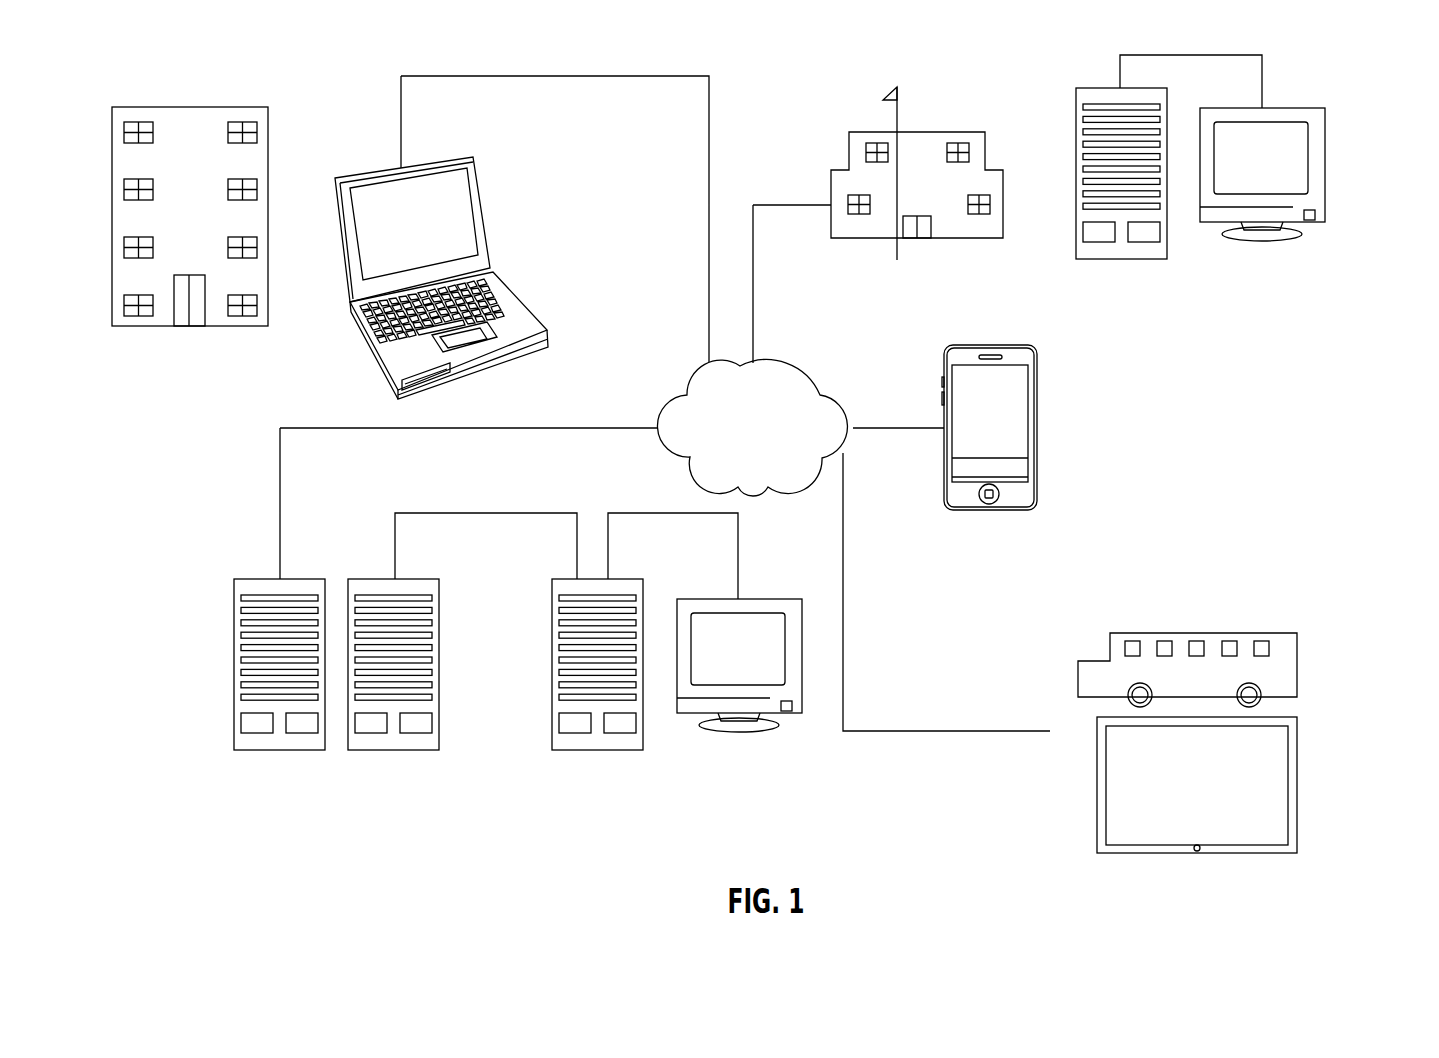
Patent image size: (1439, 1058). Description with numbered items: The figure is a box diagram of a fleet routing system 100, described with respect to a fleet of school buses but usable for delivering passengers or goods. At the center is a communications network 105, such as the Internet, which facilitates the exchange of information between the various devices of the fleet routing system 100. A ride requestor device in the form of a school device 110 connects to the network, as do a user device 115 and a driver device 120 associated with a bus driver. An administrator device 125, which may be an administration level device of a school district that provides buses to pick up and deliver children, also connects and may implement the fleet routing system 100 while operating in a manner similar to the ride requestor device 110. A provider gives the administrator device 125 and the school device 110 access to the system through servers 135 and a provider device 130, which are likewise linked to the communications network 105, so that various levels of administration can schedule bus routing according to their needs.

The fleet routing system 100 is at (1345, 58).
The communications network 105 is at (733, 439).
The school device 110 is at (1120, 261).
The user device 115 is at (1000, 513).
The driver device 120 is at (1147, 855).
The administrator device 125 is at (378, 373).
The provider device 130 is at (598, 752).
The servers 135 is at (280, 752).